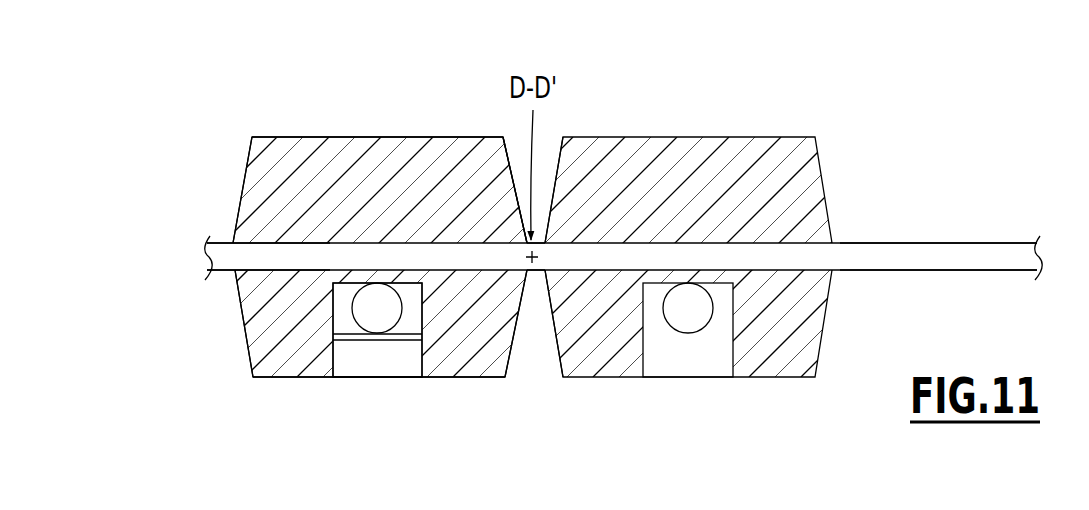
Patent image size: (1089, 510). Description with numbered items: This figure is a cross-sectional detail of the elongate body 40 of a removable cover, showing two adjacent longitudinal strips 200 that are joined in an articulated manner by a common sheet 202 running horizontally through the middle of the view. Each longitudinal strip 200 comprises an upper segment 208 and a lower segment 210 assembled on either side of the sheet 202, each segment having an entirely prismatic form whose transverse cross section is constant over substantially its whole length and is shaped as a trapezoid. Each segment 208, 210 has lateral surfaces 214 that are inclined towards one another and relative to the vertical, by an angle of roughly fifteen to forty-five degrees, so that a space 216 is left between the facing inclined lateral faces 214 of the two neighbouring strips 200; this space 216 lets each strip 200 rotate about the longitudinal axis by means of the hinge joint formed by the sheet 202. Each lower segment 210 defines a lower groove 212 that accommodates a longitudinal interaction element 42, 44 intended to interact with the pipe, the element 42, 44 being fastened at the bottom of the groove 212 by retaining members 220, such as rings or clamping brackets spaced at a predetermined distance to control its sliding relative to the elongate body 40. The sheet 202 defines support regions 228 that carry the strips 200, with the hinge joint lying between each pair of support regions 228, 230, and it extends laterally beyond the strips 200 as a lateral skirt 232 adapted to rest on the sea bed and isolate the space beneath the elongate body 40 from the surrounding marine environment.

The elongate body 40 is at (687, 264).
The longitudinal interaction element 42 is at (706, 360).
The longitudinal interaction element 44 is at (703, 344).
The longitudinal strip 200 is at (533, 225).
The sheet 202 is at (195, 243).
The upper segment 208 is at (358, 137).
The lower segment 210 is at (313, 380).
The lower groove 212 is at (403, 361).
The lateral surface 214 is at (244, 173).
The space 216 is at (523, 180).
The retaining member 220 is at (366, 342).
The support region 228 is at (234, 258).
The support region 230 is at (536, 277).
The lateral skirt 232 is at (967, 258).